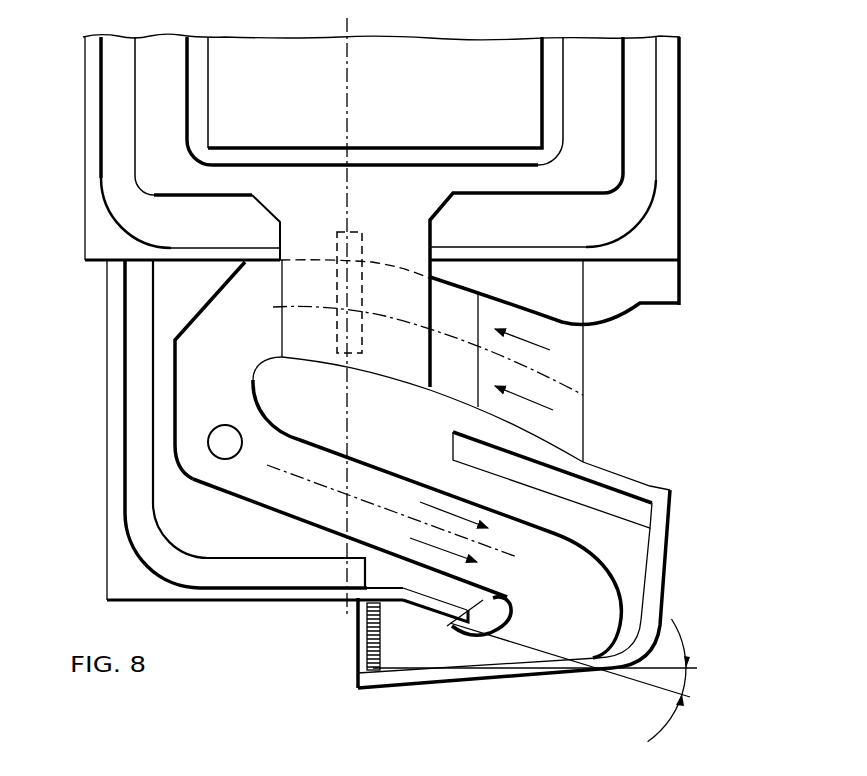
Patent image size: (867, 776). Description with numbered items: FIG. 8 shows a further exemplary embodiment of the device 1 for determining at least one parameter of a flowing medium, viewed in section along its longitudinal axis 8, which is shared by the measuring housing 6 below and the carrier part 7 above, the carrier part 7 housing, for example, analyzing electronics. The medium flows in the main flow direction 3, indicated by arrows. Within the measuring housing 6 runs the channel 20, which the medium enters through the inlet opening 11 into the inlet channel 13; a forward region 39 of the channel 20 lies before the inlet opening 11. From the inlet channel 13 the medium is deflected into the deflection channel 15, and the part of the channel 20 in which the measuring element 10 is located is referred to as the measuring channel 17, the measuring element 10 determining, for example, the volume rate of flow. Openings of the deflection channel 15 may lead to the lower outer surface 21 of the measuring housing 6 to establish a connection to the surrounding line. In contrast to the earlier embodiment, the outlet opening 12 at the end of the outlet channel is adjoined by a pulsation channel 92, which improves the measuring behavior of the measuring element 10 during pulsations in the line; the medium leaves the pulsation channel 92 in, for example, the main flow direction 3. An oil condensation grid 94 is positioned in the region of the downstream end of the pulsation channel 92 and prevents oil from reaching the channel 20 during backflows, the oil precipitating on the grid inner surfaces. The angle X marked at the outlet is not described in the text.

The device 1 is at (692, 144).
The main flow direction 3 is at (705, 362).
The measuring housing 6 is at (92, 534).
The carrier part 7 is at (679, 209).
The longitudinal axis 8 is at (353, 108).
The measuring element 10 is at (366, 245).
The inlet opening 11 is at (588, 354).
The outlet opening 12 is at (578, 644).
The inlet channel 13 is at (588, 416).
The deflection channel 15 is at (197, 350).
The measuring channel 17 is at (408, 338).
The channel 20 is at (286, 488).
The lower outer surface 21 is at (484, 627).
The forward region 39 is at (603, 378).
The pulsation channel 92 is at (503, 647).
The oil condensation grid 94 is at (375, 645).
The angle X is at (690, 687).